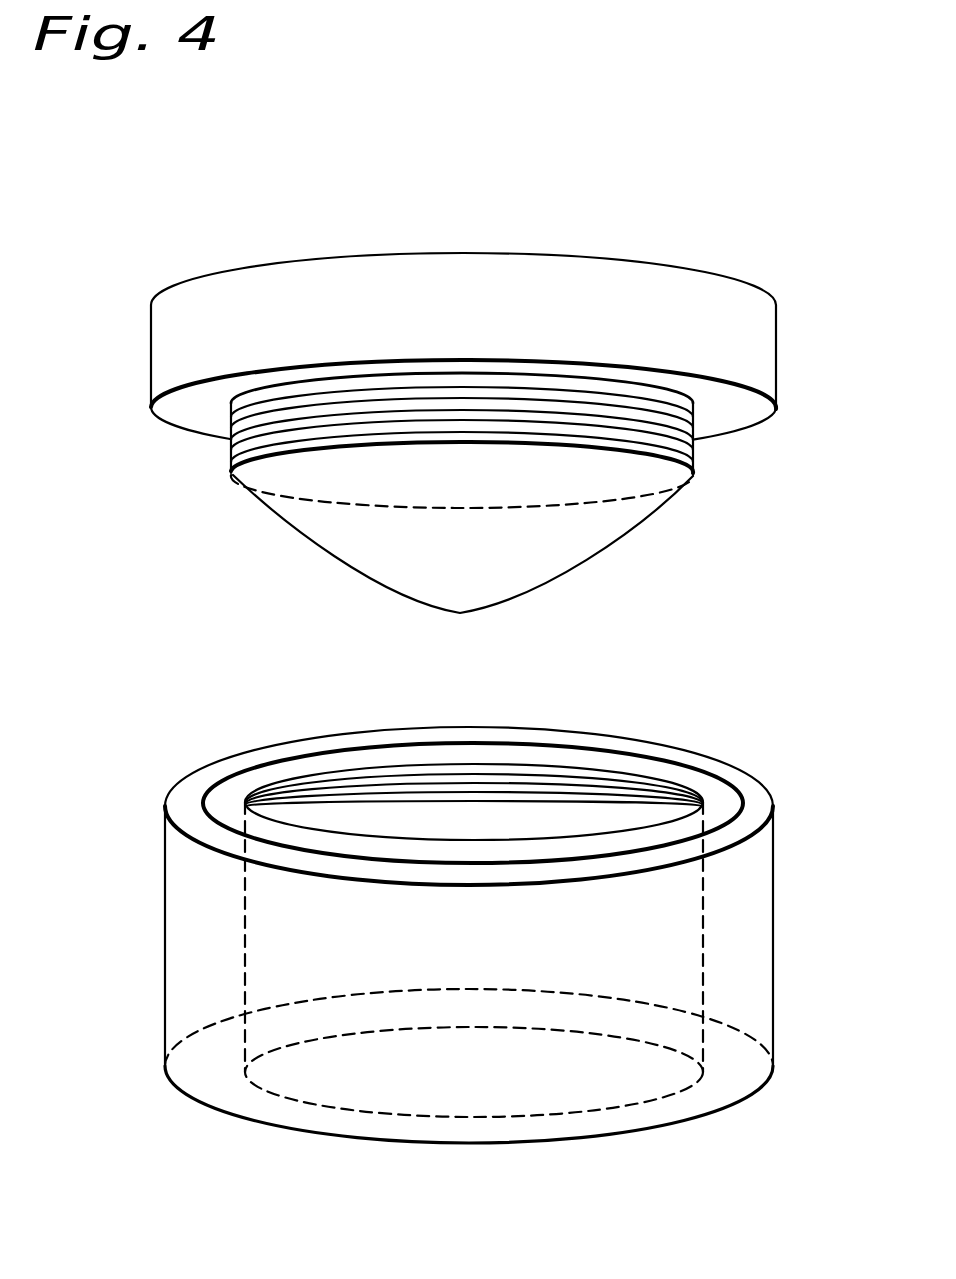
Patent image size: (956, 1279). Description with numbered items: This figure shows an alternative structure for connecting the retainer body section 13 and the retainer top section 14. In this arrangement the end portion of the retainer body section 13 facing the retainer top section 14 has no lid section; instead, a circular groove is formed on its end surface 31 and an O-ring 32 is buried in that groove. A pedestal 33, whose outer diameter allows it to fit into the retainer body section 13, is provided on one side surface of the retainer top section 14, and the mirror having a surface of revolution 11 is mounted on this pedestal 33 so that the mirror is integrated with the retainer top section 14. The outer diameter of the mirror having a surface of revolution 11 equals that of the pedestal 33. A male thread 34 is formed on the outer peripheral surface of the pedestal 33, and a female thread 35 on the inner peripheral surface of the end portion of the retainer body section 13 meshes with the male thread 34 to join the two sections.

The mirror having a surface of revolution 11 is at (551, 590).
The retainer body section 13 is at (775, 977).
The retainer top section 14 is at (777, 358).
The end surface 31 is at (760, 804).
The O-ring 32 is at (707, 778).
The pedestal 33 is at (223, 413).
The male thread 34 is at (655, 435).
The female thread 35 is at (303, 790).